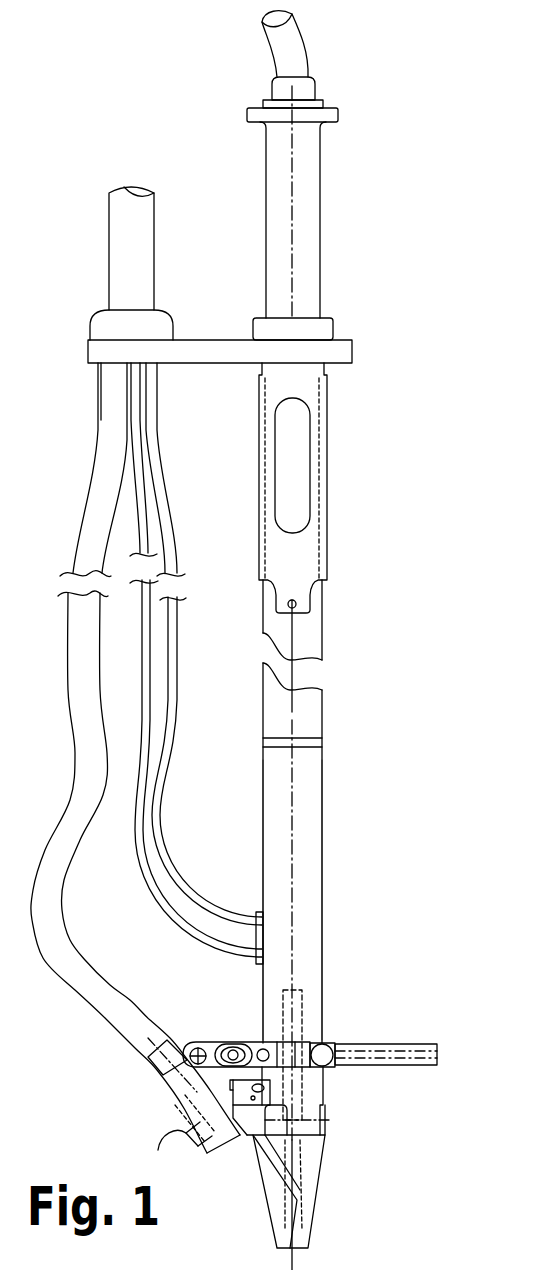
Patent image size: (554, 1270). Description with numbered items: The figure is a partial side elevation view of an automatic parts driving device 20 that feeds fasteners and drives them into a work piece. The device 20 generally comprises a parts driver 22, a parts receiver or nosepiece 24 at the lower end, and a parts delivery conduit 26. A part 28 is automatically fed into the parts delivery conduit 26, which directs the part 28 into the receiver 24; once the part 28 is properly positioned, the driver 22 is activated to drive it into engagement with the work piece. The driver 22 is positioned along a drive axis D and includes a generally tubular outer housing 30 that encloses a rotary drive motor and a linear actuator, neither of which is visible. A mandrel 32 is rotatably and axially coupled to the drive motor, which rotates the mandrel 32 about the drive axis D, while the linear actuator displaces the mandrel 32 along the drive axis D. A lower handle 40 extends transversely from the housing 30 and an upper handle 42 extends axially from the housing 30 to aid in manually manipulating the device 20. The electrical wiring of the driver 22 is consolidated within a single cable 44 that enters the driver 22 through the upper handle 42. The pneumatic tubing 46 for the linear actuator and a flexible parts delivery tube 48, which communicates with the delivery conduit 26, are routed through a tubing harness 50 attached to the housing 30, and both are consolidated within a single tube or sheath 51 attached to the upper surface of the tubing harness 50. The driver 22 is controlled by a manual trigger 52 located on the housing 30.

The automatic parts driving device 20 is at (380, 296).
The parts driver 22 is at (338, 808).
The parts receiver or nosepiece 24 is at (330, 1181).
The parts delivery conduit 26 is at (229, 1176).
The part 28 is at (203, 1141).
The tubular outer housing 30 is at (322, 898).
The mandrel 32 is at (310, 1010).
The lower handle 40 is at (372, 1042).
The upper handle 42 is at (320, 190).
The cable 44 is at (307, 48).
The pneumatic tubing 46 is at (146, 858).
The flexible parts delivery tube 48 is at (66, 806).
The tubing harness 50 is at (88, 352).
The tube or sheath 51 is at (110, 279).
The manual trigger 52 is at (308, 452).
The drive axis D is at (292, 710).